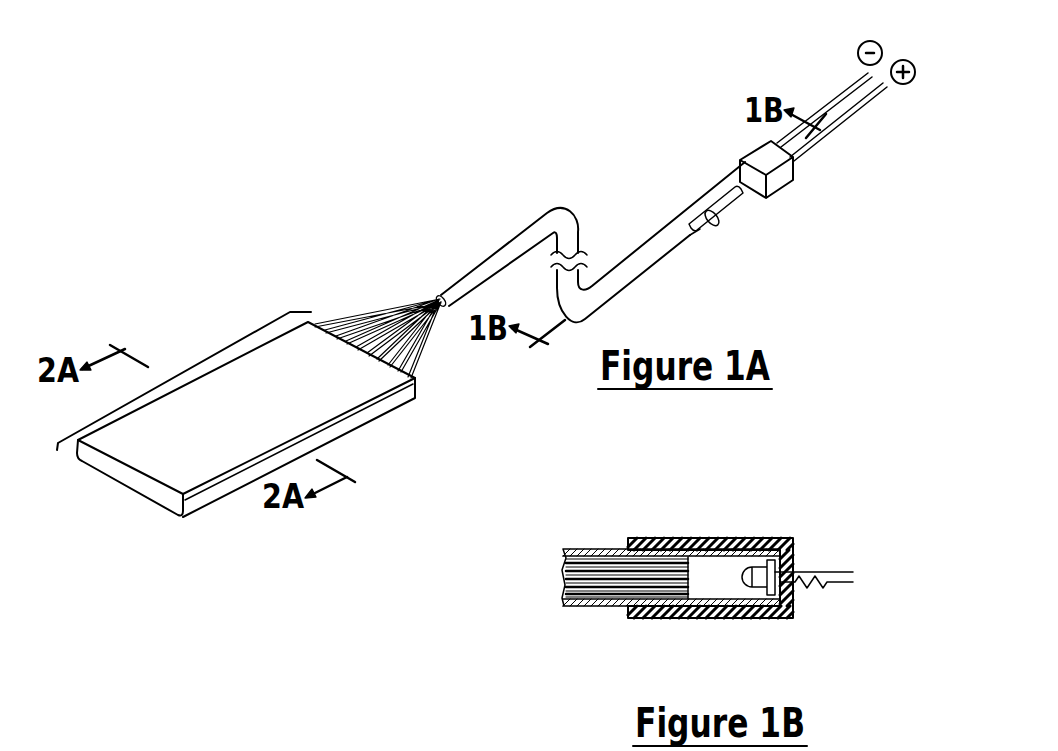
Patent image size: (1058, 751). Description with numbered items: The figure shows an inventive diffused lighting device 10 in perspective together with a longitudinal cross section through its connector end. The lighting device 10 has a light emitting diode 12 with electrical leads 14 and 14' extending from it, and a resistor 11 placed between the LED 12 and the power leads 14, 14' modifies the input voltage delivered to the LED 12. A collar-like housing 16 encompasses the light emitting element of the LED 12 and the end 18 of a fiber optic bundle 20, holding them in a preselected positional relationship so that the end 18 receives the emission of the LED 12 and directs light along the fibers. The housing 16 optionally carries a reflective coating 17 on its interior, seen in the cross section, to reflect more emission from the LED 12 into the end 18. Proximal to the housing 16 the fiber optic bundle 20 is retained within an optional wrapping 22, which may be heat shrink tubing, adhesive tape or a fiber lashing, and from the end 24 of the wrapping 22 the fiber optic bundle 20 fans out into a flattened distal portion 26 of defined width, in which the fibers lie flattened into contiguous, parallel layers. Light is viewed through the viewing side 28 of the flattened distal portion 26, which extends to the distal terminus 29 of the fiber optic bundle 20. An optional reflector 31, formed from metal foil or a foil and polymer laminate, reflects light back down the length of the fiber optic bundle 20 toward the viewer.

In FIG. 1A, the lighting device 10 is at (291, 230).
In FIG. 1B, the resistor 11 is at (813, 583).
In FIG. 1A, the light emitting diode 12 is at (740, 167).
In FIG. 1B, the light emitting diode 12 is at (759, 572).
In FIG. 1A, the electrical lead 14 is at (825, 77).
In FIG. 1B, the electrical lead 14 is at (829, 592).
In FIG. 1A, the electrical lead 14' is at (854, 115).
In FIG. 1B, the electrical lead 14' is at (829, 566).
In FIG. 1A, the housing 16 is at (725, 192).
In FIG. 1B, the housing 16 is at (780, 543).
In FIG. 1B, the reflective coating 17 is at (747, 619).
In FIG. 1A, the end of fiber optic bundle 18 is at (702, 206).
In FIG. 1B, the end of fiber optic bundle 18 is at (633, 620).
In FIG. 1A, the fiber optic bundle 20 is at (390, 303).
In FIG. 1B, the fiber optic bundle 20 is at (563, 578).
In FIG. 1A, the wrapping 22 is at (548, 223).
In FIG. 1B, the wrapping 22 is at (593, 549).
In FIG. 1A, the end of wrapping 24 is at (457, 308).
In FIG. 1A, the flattened distal portion 26 is at (190, 362).
In FIG. 1A, the viewing side 28 is at (245, 425).
In FIG. 1A, the distal terminus 29 is at (182, 518).
In FIG. 1A, the reflector 31 is at (133, 481).